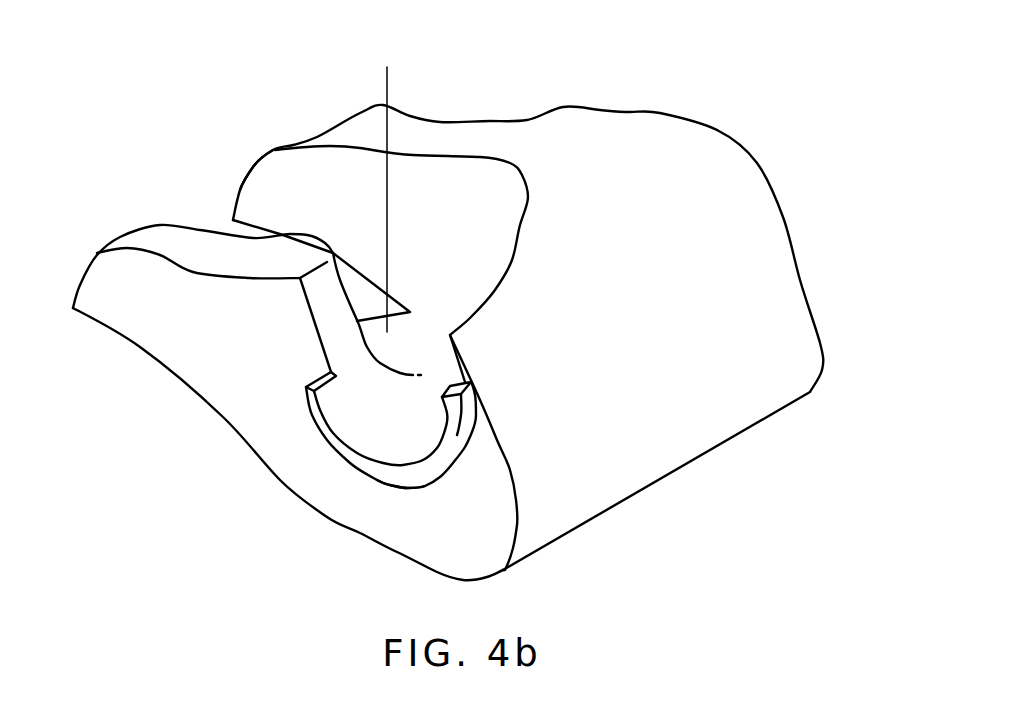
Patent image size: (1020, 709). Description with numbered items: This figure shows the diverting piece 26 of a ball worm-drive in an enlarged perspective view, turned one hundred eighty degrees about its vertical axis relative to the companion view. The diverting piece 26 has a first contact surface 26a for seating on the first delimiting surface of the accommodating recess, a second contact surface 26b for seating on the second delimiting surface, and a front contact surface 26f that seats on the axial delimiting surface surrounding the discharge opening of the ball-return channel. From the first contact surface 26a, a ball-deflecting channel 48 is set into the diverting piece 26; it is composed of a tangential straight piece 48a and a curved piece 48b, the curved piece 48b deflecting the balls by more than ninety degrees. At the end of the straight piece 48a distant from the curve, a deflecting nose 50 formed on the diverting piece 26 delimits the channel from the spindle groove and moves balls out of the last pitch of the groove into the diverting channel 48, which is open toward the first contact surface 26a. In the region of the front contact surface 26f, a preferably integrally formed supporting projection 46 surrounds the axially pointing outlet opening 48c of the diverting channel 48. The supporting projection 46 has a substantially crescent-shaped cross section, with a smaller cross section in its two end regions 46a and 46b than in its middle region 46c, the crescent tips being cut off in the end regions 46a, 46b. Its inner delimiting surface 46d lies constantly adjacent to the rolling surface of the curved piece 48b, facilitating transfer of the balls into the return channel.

The diverting piece 26 is at (480, 327).
The first contact surface 26a is at (507, 133).
The second contact surface 26b is at (752, 243).
The front contact surface 26f is at (413, 537).
The supporting projection 46 is at (442, 477).
The end region of the supporting projection 46a is at (307, 403).
The end region of the supporting projection 46b is at (465, 402).
The middle region of the supporting projection 46c is at (372, 470).
The inner delimiting surface 46d is at (370, 435).
The ball-deflecting channel 48 is at (290, 264).
The tangential straight piece 48a is at (323, 207).
The curved piece 48b is at (330, 300).
The outlet opening 48c is at (393, 400).
The deflecting nose 50 is at (383, 183).